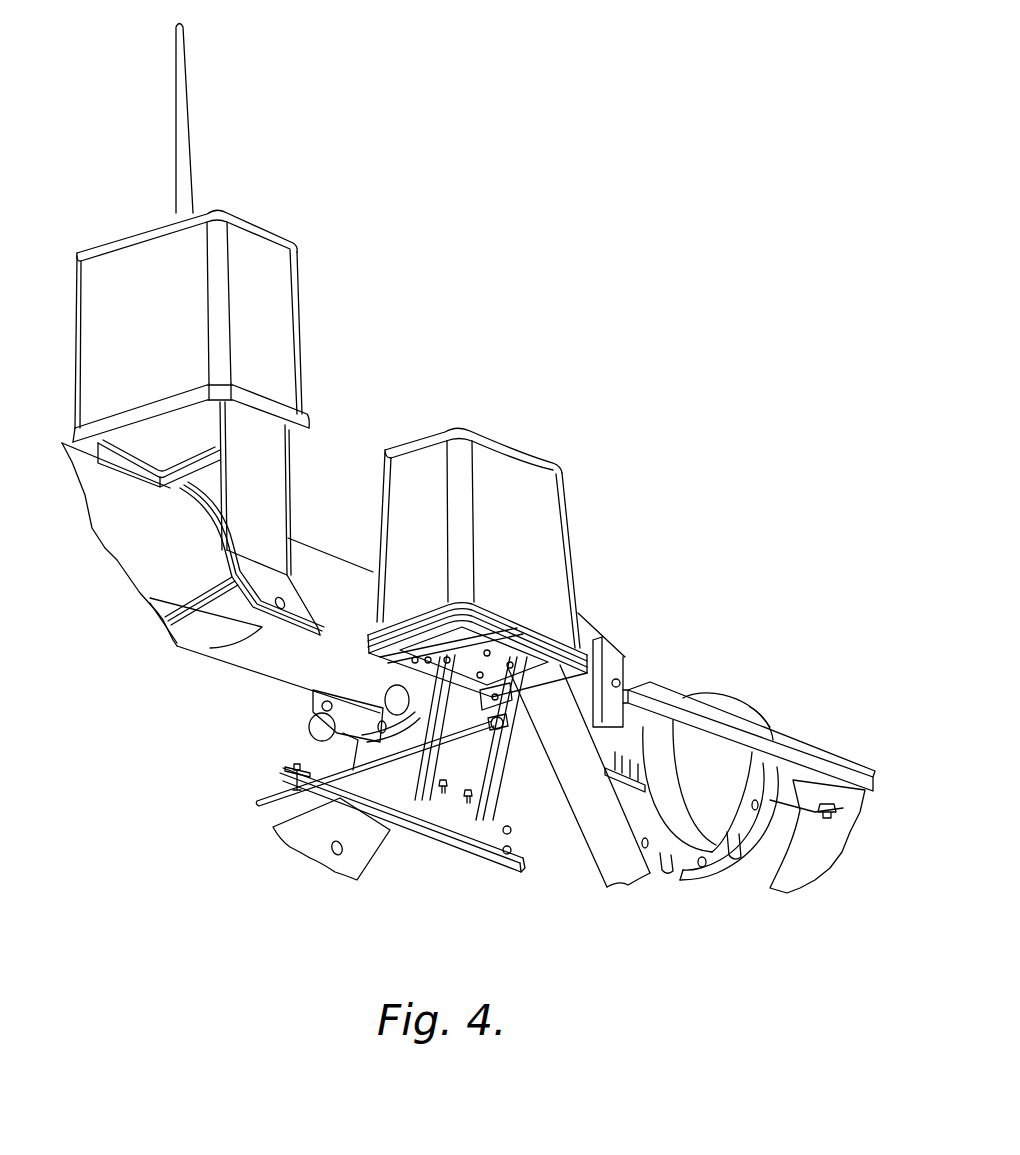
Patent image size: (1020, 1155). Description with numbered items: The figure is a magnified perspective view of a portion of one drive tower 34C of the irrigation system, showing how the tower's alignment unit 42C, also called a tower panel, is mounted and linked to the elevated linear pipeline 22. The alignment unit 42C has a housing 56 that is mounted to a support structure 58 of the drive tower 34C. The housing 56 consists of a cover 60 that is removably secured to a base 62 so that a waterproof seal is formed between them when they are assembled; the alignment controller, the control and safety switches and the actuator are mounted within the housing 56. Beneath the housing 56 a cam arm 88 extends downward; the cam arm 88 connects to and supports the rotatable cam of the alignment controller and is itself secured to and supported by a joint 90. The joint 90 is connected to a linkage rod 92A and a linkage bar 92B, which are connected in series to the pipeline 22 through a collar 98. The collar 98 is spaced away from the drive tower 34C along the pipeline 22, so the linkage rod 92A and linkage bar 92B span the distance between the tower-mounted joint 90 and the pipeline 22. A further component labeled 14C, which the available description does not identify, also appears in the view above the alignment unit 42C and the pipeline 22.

The antenna housing 14C is at (235, 203).
The alignment unit 42C is at (520, 515).
The housing 56 is at (546, 511).
The cover 60 is at (557, 566).
The cam arm 88 is at (487, 673).
The collar 98 is at (596, 630).
The base 62 is at (582, 660).
The joint 90 is at (512, 708).
The support structure 58 is at (480, 773).
The linkage rod 92A is at (330, 777).
The linkage bar 92B is at (447, 842).
The drive tower 34C is at (608, 884).
The pipeline 22 is at (798, 872).